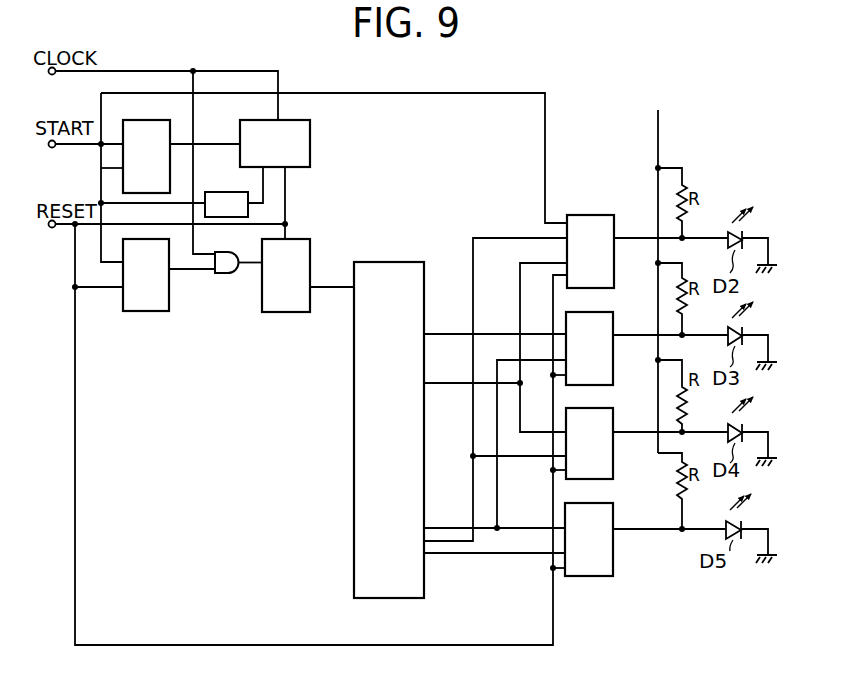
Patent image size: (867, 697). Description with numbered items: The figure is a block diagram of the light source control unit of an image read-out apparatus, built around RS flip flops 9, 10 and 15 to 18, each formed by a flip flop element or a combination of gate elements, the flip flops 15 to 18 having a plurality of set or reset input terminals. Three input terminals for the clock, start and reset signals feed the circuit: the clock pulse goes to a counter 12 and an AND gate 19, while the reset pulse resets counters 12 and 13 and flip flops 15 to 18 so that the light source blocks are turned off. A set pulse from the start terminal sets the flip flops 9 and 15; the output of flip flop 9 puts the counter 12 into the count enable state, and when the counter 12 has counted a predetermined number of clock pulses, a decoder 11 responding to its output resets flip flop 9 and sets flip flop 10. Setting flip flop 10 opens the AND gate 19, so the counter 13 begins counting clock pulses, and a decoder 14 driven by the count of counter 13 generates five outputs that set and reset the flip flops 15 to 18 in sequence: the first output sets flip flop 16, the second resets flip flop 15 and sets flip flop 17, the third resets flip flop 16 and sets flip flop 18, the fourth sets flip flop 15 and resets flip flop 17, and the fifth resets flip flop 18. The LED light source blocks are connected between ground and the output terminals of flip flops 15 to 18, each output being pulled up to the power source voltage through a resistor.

The flip flop 9 is at (171, 137).
The flip flop 10 is at (133, 312).
The decoder 11 is at (216, 192).
The counter 12 is at (310, 140).
The counter 13 is at (262, 302).
The decoder 14 is at (410, 262).
The flip flop 15 is at (614, 227).
The flip flop 16 is at (613, 322).
The flip flop 17 is at (613, 427).
The flip flop 18 is at (613, 517).
The AND gate 19 is at (239, 273).